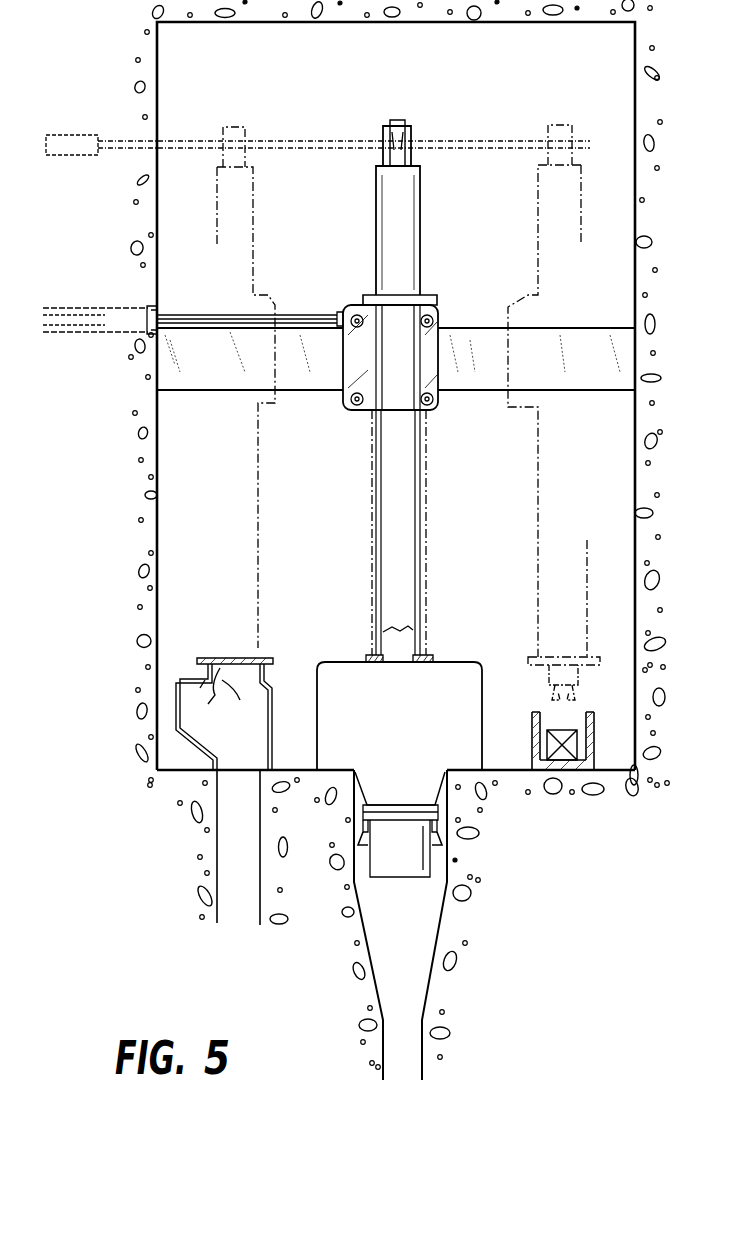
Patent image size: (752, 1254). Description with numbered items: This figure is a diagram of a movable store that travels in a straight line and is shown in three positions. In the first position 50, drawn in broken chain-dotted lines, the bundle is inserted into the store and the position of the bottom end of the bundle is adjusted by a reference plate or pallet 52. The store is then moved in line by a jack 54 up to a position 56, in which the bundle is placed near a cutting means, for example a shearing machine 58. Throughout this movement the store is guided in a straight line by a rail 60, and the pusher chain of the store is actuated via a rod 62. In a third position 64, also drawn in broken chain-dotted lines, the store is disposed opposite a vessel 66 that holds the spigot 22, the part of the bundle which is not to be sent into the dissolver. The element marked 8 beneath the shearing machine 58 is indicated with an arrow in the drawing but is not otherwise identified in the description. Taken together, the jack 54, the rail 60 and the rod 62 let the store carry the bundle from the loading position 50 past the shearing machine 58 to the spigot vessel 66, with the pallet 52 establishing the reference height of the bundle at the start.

The discharge passage 8 is at (400, 895).
The spigot 22 is at (560, 732).
The first position 50 is at (262, 498).
The reference plate or pallet 52 is at (236, 690).
The jack 54 is at (106, 320).
The position 56 is at (408, 478).
The shearing machine 58 is at (445, 676).
The rail 60 is at (488, 342).
The rod 62 is at (314, 146).
The third position 64 is at (540, 203).
The vessel 66 is at (595, 768).